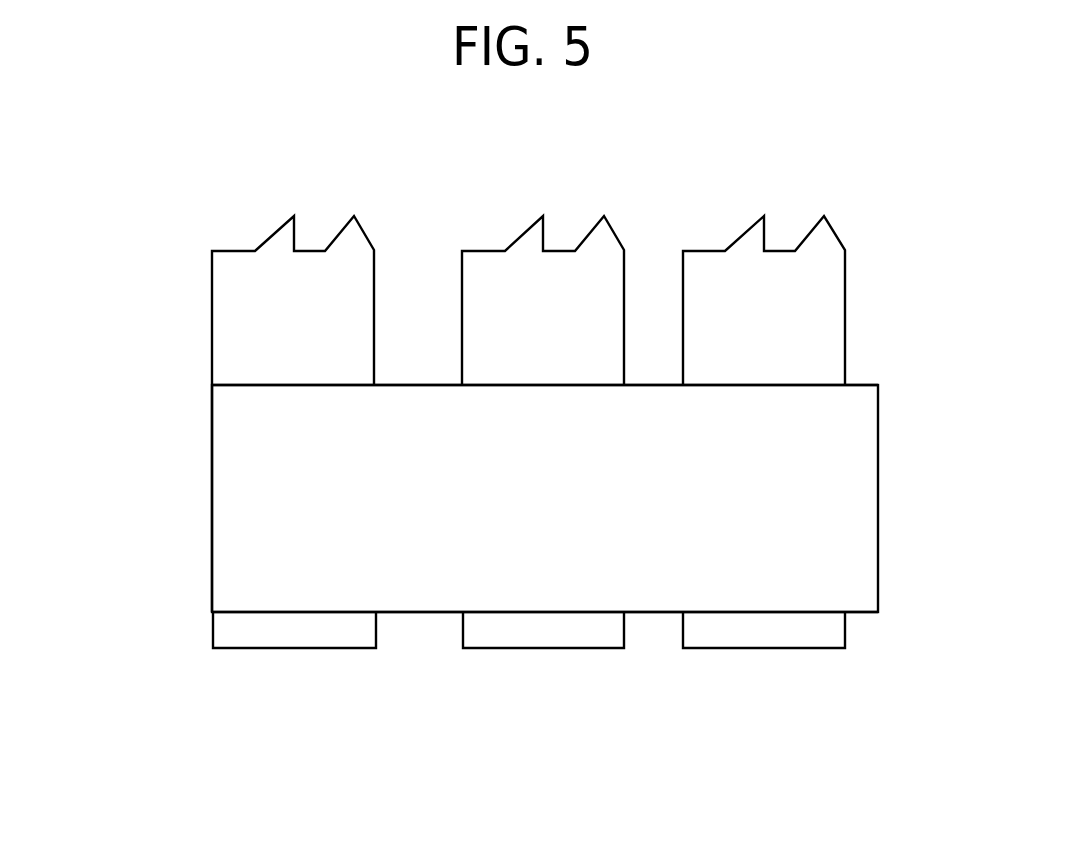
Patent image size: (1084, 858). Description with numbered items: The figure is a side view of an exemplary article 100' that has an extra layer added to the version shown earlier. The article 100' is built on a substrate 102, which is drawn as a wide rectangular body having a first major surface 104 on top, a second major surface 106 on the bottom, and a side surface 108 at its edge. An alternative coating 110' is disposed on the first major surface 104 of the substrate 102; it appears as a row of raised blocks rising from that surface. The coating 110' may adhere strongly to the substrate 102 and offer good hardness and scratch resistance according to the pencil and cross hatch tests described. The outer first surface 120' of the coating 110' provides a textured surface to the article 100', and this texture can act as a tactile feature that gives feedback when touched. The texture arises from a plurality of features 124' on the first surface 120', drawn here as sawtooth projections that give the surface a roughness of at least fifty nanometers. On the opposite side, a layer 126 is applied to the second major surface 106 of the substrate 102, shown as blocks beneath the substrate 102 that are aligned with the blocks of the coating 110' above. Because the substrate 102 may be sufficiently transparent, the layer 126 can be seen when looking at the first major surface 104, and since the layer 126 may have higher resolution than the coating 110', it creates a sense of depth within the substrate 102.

The article 100' is at (90, 287).
The substrate 102 is at (848, 502).
The first major surface 104 is at (878, 385).
The second major surface 106 is at (435, 612).
The side surface of substrate 108 is at (212, 497).
The coating 110' is at (815, 300).
The first surface 120' is at (514, 284).
The features 124' is at (283, 276).
The layer 126 is at (305, 648).